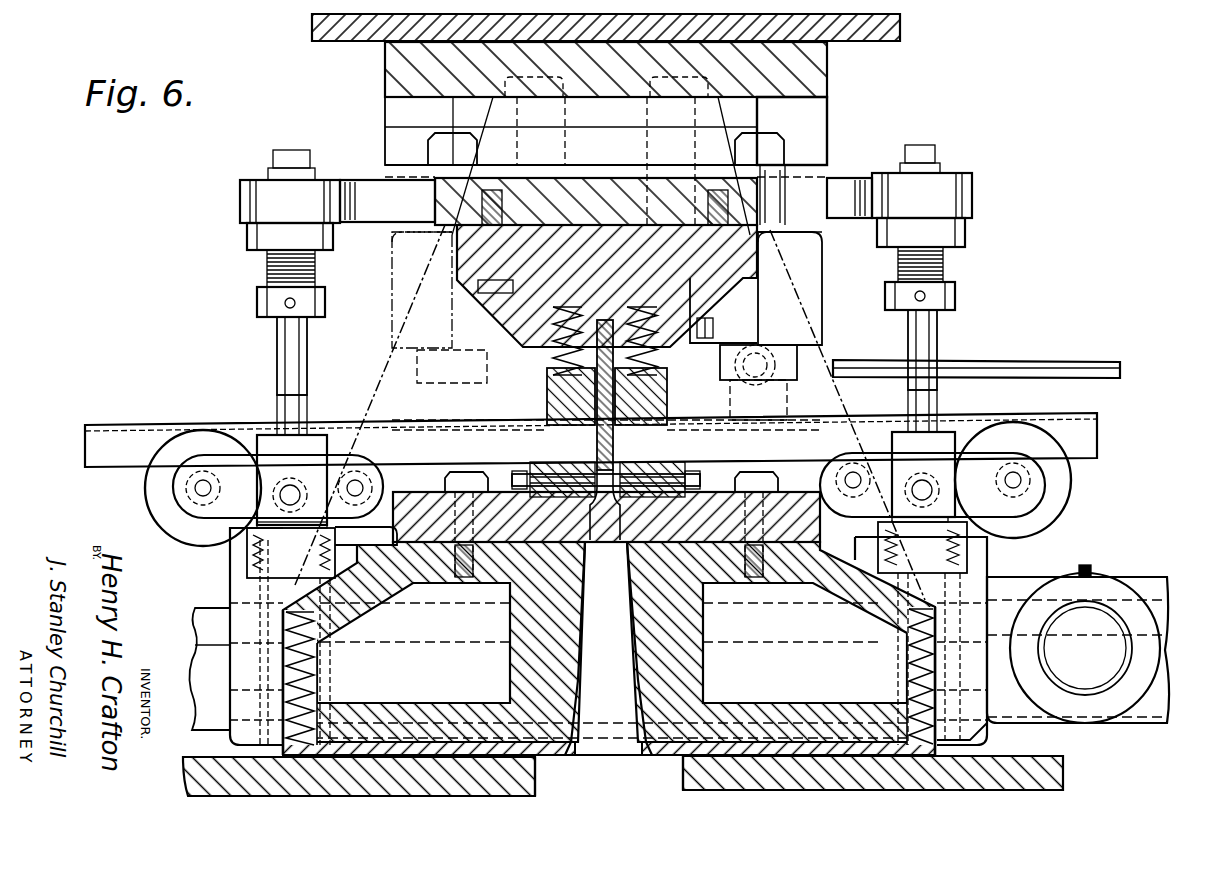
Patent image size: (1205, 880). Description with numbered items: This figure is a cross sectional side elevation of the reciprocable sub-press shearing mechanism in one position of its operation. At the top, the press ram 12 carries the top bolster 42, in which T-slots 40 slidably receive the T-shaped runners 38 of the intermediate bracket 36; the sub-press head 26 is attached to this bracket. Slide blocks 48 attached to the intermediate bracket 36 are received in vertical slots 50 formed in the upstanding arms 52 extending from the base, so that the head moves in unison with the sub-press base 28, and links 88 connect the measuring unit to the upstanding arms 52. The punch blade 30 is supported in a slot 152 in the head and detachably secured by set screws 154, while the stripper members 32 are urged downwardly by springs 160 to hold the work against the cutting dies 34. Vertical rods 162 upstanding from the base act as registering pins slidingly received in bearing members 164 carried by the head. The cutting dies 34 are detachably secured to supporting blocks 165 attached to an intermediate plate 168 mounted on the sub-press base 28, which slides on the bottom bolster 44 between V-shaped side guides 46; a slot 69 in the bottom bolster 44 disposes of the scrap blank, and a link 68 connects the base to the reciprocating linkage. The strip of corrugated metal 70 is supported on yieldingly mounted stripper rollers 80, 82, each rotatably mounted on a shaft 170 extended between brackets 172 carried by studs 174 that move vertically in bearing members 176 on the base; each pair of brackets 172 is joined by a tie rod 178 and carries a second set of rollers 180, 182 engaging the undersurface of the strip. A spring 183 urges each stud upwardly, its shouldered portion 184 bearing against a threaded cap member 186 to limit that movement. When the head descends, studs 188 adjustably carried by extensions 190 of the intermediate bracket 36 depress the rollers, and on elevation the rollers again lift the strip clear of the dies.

The press ram 12 is at (336, 43).
The top bolster 42 is at (385, 72).
The T-slots 40 is at (385, 108).
The vertical slots 50 is at (565, 115).
The T-shaped runners 38 is at (760, 108).
The slide blocks 48 is at (652, 180).
The extensions 190 is at (370, 182).
The intermediate bracket 36 is at (762, 196).
The vertical rods 162 is at (392, 236).
The bearing members 164 is at (392, 292).
The sub-press head 26 is at (464, 313).
The springs 160 is at (553, 332).
The slot 152 is at (605, 318).
The set screws 154 is at (715, 328).
The stripper members 32 is at (547, 385).
The punch blade 30 is at (667, 388).
The second set of rollers 180 is at (405, 440).
The second set of rollers 182 is at (770, 422).
The links 88 is at (975, 361).
The upstanding arms 52 is at (385, 360).
The strip of corrugated metal 70 is at (150, 425).
The stripper roller 80 is at (192, 432).
The stripper roller 82 is at (1040, 462).
The shaft 170 is at (185, 488).
The tie rod 178 is at (280, 498).
The brackets 172 is at (262, 440).
The studs 174 is at (307, 410).
The studs 188 is at (277, 340).
The supporting blocks 165 is at (540, 463).
The sub-press base 28 is at (700, 620).
The cutting dies 34 is at (608, 648).
The spring 183 is at (317, 668).
The threaded cap member 186 is at (247, 530).
The intermediate plate 168 is at (392, 533).
The shouldered portion 184 is at (253, 560).
The bearing members 176 is at (230, 680).
The side guides 46 is at (195, 650).
The bottom bolster 44 is at (215, 758).
The slot 69 is at (680, 778).
The link 68 is at (1140, 577).